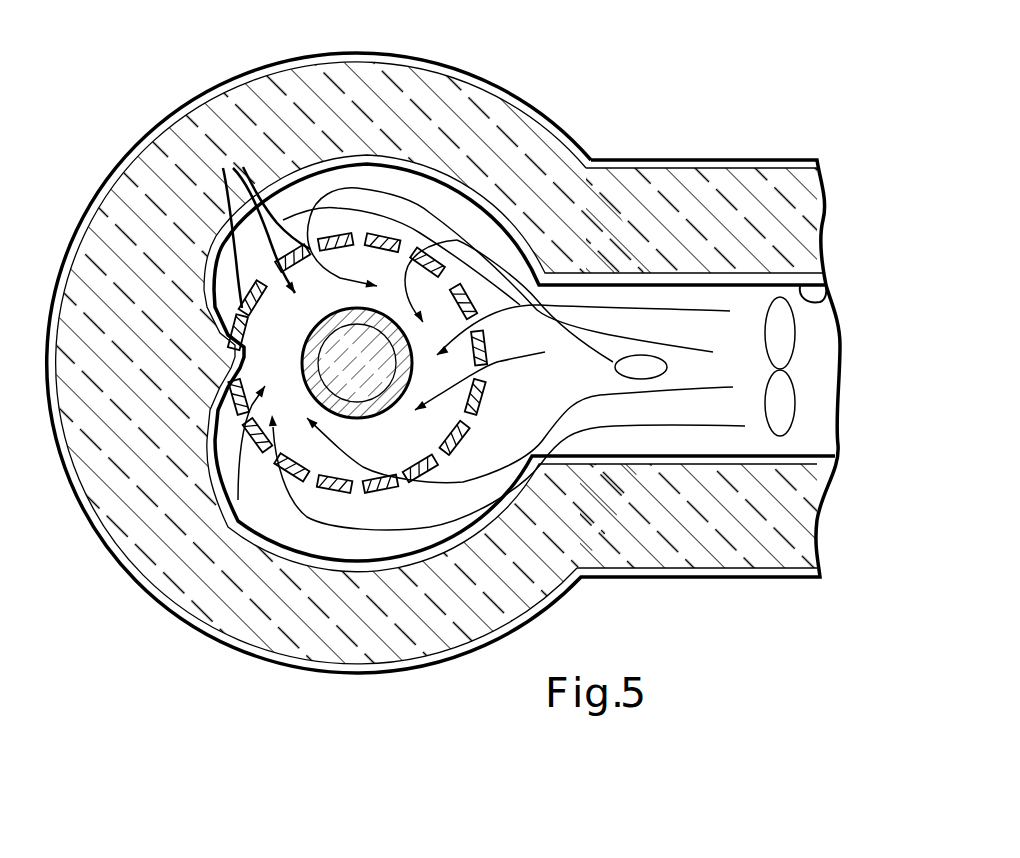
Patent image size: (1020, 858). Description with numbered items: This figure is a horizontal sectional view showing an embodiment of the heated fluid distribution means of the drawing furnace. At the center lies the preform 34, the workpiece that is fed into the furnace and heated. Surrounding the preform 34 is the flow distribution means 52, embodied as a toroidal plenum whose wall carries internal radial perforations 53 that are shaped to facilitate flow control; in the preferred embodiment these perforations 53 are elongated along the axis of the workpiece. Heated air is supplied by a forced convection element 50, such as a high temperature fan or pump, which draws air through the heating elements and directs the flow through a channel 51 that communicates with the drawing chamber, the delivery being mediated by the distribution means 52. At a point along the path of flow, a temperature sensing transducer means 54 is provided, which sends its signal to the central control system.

The distribution means 52 is at (385, 176).
The internal radial perforations 53 is at (259, 223).
The preform 34 is at (318, 342).
The temperature sensing transducer means 54 is at (650, 367).
The channel 51 is at (826, 300).
The forced convection element 50 is at (785, 407).